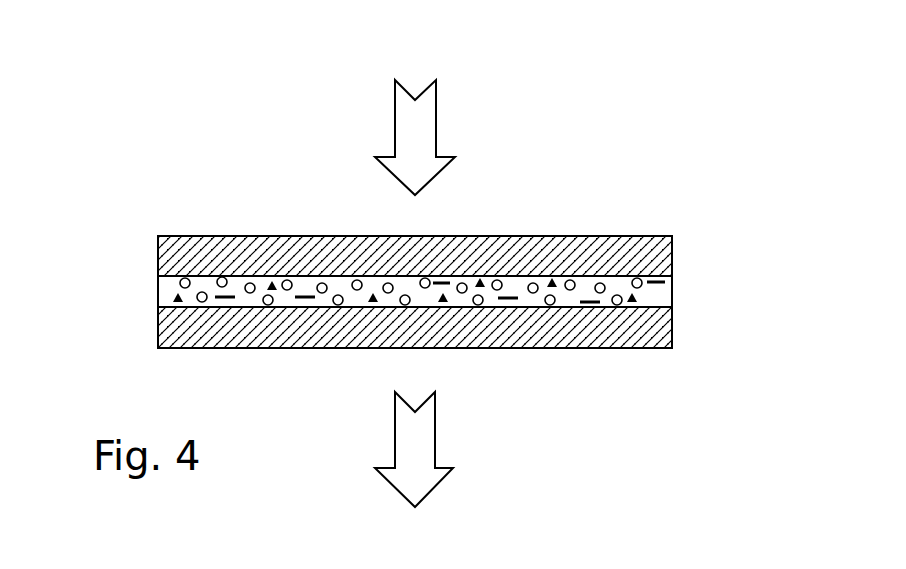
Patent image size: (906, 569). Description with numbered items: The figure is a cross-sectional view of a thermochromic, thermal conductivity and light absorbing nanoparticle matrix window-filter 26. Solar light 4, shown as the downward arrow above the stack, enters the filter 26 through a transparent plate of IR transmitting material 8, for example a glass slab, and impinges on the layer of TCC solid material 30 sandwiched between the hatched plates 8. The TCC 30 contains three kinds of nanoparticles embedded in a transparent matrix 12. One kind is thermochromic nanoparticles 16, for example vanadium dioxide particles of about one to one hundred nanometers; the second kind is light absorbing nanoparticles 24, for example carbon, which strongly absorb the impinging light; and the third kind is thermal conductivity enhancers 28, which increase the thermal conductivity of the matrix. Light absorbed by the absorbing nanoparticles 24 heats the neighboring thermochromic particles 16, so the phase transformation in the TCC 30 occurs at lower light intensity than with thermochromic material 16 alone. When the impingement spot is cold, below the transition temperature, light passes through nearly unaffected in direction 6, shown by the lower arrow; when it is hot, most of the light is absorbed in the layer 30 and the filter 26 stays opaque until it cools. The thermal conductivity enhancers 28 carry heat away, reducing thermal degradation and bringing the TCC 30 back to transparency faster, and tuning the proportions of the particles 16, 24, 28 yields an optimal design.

The solar light 4 is at (415, 137).
The direction 6 is at (414, 449).
The transparent plate of IR transmitting material 8 is at (158, 252).
The transparent matrix 12 is at (158, 337).
The thermochromic nanoparticles 16 is at (572, 285).
The light absorbing nanoparticles 24 is at (233, 297).
The nanoparticle matrix window-filter 26 is at (695, 148).
The thermal conductivity enhancer nanoparticles 28 is at (480, 283).
The layer of TCC solid material 30 is at (672, 291).